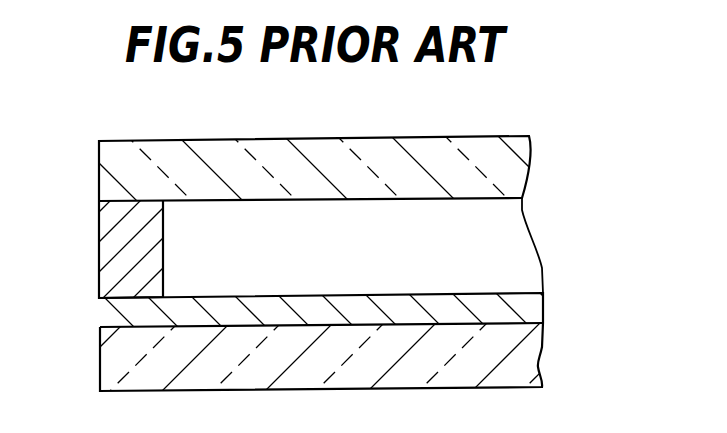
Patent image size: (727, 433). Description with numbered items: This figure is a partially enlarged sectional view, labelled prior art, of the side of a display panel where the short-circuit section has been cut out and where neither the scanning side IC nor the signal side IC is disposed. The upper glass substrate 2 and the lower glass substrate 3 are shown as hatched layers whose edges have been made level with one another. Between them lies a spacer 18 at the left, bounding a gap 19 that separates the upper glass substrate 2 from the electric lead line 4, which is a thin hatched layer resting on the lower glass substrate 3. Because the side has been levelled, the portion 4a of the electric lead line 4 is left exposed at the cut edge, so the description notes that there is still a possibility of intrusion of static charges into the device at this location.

The upper glass substrate 2 is at (122, 163).
The spacer 18 is at (113, 248).
The gap 19 is at (522, 258).
The electric lead line 4 is at (495, 313).
The portion of the electric lead line 4a is at (93, 318).
The lower glass substrate 3 is at (123, 358).